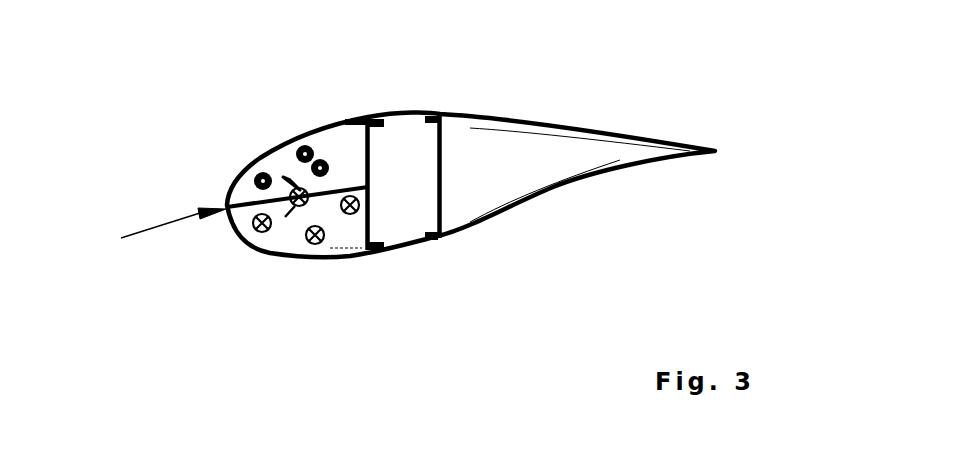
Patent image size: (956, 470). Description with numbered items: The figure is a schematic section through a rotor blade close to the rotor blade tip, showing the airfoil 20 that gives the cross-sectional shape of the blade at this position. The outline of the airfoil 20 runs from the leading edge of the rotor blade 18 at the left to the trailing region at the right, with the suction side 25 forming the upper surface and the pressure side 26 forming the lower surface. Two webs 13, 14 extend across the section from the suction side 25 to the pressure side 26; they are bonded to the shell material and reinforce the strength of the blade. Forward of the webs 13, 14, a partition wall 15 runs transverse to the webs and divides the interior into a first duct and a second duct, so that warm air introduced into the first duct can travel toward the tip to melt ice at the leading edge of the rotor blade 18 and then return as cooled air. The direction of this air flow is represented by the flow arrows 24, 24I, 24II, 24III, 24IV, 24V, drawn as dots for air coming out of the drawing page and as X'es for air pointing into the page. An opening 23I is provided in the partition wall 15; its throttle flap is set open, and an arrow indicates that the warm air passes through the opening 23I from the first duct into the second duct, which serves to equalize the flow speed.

The web 13 is at (442, 153).
The web 14 is at (371, 155).
The partition wall 15 is at (247, 204).
The leading edge of the rotor blade 18 is at (158, 232).
The airfoil 20 is at (580, 125).
The opening 23I is at (297, 207).
The flow arrow 24 is at (257, 173).
The flow arrow 24I is at (303, 145).
The flow arrow 24II is at (328, 162).
The flow arrow 24III is at (262, 232).
The flow arrow 24IV is at (315, 244).
The flow arrow 24V is at (355, 258).
The suction side 25 is at (355, 118).
The pressure side 26 is at (350, 214).